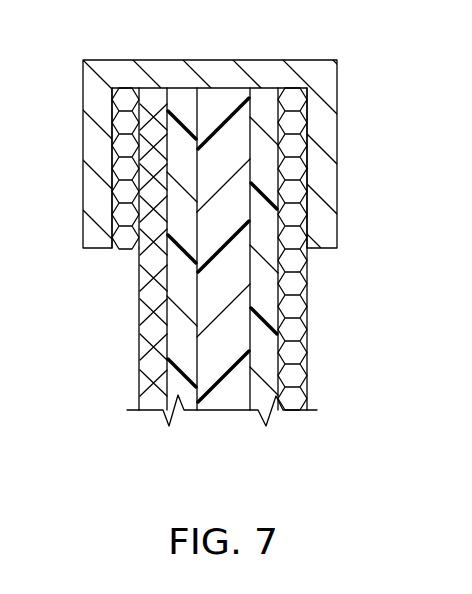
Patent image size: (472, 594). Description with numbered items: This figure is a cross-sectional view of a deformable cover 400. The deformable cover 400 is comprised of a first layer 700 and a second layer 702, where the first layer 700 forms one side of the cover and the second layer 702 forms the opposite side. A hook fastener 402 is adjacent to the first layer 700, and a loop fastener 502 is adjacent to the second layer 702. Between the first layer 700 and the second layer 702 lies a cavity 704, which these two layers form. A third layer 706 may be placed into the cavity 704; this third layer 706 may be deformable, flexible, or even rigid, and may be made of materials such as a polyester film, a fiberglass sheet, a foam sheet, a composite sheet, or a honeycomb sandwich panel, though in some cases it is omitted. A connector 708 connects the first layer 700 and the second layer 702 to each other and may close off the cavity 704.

The deformable cover 400 is at (236, 235).
The hook fastener 402 is at (153, 403).
The loop fastener 502 is at (294, 403).
The first layer 700 is at (180, 95).
The second layer 702 is at (263, 93).
The cavity 704 is at (223, 108).
The third layer 706 is at (223, 403).
The connector 708 is at (95, 135).